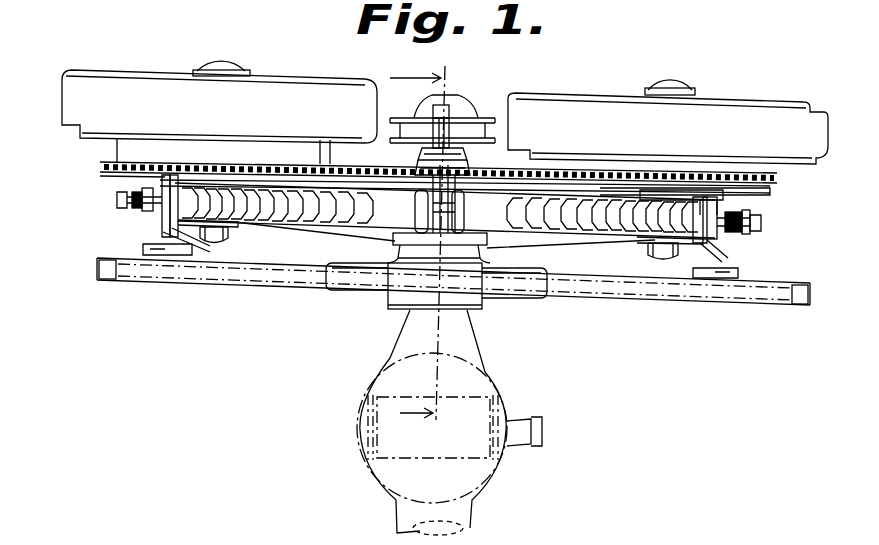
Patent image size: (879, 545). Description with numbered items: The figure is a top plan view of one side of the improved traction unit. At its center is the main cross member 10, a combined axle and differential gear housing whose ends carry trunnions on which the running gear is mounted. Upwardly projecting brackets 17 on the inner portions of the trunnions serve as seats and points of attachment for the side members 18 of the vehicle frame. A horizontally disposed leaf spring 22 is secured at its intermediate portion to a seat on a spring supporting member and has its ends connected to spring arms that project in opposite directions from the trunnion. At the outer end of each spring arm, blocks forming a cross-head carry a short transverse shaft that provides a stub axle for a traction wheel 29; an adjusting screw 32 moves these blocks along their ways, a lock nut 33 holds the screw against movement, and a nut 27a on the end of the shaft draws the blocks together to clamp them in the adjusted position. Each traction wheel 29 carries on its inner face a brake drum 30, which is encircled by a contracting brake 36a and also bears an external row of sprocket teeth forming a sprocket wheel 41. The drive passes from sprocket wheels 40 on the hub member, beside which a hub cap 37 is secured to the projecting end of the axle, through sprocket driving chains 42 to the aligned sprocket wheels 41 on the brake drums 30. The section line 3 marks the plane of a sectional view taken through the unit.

The section line 3- 3 is at (422, 251).
The main cross member 10 is at (393, 357).
The bracket 17 is at (362, 281).
The side member 18 is at (205, 286).
The leaf spring 22 is at (575, 228).
The nut 27a is at (228, 233).
The traction wheel 29 is at (272, 95).
The brake drum 30 is at (151, 151).
The adjusting screw 32 is at (117, 200).
The lock nut 33 is at (141, 208).
The contracting brake 36a is at (413, 132).
The hub cap 37 is at (455, 112).
The sprocket wheel 40 is at (408, 163).
The sprocket wheel 41 is at (100, 166).
The sprocket driving chain 42 is at (274, 168).